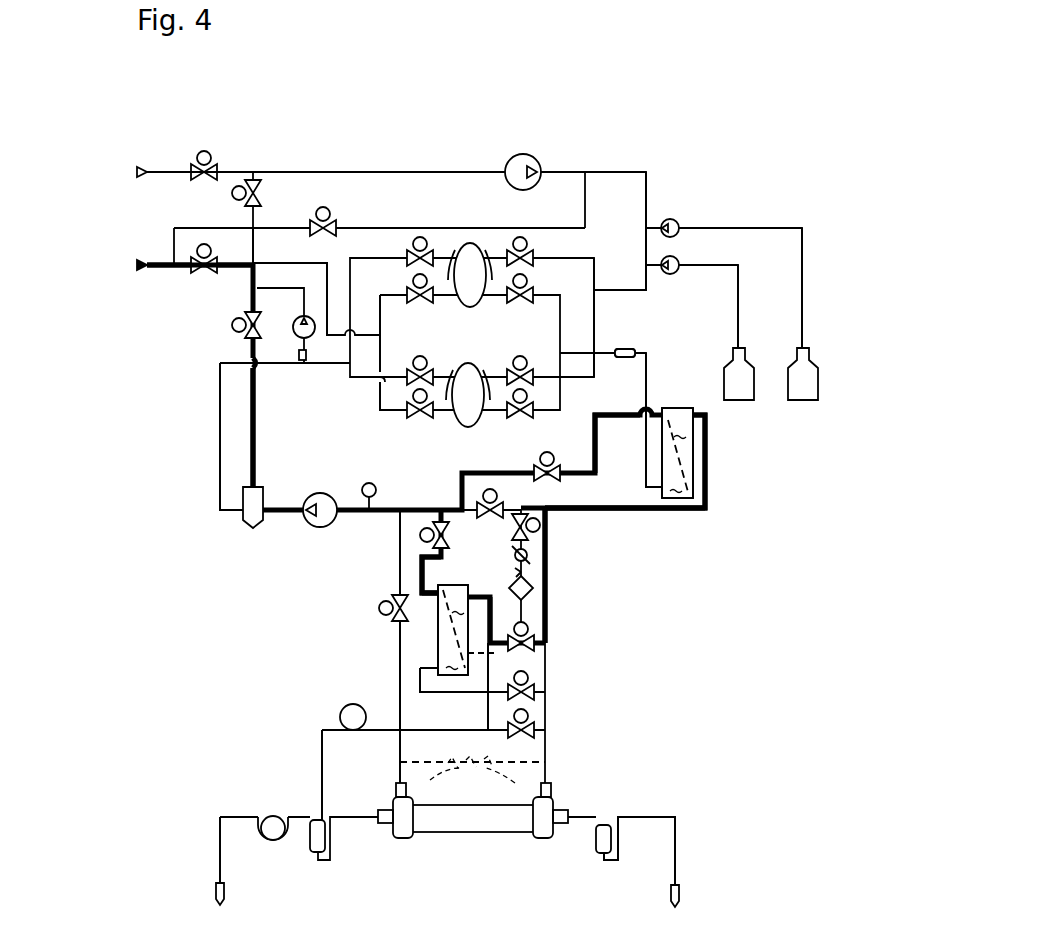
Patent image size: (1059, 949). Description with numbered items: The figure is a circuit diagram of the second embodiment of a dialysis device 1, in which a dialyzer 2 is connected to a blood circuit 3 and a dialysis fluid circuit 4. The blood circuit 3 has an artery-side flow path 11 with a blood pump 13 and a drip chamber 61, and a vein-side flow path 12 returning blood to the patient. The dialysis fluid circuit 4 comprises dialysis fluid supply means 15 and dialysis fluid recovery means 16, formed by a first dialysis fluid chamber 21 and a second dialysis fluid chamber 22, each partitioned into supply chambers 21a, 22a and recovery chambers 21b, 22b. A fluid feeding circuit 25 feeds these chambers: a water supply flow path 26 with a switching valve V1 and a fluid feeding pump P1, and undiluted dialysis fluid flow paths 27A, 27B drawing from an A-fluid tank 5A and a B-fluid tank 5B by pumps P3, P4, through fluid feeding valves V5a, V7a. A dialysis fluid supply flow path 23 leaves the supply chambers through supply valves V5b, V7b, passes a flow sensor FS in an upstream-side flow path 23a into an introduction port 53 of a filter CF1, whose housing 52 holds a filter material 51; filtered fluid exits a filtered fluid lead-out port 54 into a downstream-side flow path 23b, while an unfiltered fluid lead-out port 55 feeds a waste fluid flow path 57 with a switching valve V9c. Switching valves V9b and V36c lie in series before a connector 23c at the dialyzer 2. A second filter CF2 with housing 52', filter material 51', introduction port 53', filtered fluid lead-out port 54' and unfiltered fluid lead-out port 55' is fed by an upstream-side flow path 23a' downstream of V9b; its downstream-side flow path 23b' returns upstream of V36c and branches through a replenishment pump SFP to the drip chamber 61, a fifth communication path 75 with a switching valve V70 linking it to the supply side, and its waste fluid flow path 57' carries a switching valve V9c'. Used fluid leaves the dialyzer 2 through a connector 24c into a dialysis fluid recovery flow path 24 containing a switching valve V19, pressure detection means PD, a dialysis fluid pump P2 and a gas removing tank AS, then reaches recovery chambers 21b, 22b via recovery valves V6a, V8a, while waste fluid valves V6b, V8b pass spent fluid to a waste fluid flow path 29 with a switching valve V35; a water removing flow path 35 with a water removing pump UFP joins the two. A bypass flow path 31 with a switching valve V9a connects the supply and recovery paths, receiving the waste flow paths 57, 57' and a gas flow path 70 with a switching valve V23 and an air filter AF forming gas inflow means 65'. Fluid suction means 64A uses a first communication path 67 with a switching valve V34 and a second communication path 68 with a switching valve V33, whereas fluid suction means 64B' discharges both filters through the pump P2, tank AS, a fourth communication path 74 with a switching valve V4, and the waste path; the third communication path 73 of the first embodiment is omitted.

The dialysis device 1 is at (642, 70).
The dialyzer 2 is at (484, 838).
The blood circuit 3 is at (677, 838).
The dialysis fluid circuit 4 is at (698, 515).
The A-fluid tank 5A is at (802, 400).
The B-fluid tank 5B is at (740, 400).
The artery-side flow path 11 is at (220, 860).
The vein-side flow path 12 is at (676, 862).
The blood pump 13 is at (274, 813).
The dialysis fluid supply means 15 is at (597, 310).
The dialysis fluid recovery means 16 is at (377, 394).
The first dialysis fluid chamber 21 is at (462, 306).
The dialysis fluid supply chamber 21a is at (481, 248).
The dialysis fluid recovery chamber 21b is at (458, 248).
The second dialysis fluid chamber 22 is at (460, 422).
The dialysis fluid supply chamber 22a is at (482, 378).
The dialysis fluid recovery chamber 22b is at (457, 378).
The dialysis fluid supply flow path 23 is at (670, 512).
The upstream-side flow path 23a is at (670, 420).
The downstream-side flow path 23b is at (716, 473).
The upstream-side flow path 23a' is at (423, 685).
The downstream-side flow path 23b' is at (565, 686).
The connector 23c is at (497, 796).
The dialysis fluid recovery flow path 24 is at (397, 776).
The connector 24c is at (439, 796).
The fluid feeding circuit 25 is at (646, 172).
The water supply flow path 26 is at (351, 171).
The undiluted dialysis fluid flow path 27A is at (802, 300).
The undiluted dialysis fluid flow path 27B is at (738, 302).
The waste fluid flow path 29 is at (238, 270).
The bypass flow path 31 is at (435, 509).
The water removing flow path 35 is at (301, 360).
The filter material 51 is at (643, 462).
The filter material 51' is at (493, 667).
The housing 52 is at (741, 453).
The housing 52' is at (453, 655).
The introduction port 53 is at (636, 497).
The introduction port 53' is at (398, 669).
The filtered fluid lead-out port 54 is at (689, 424).
The filtered fluid lead-out port 54' is at (470, 616).
The unfiltered fluid lead-out port 55 is at (637, 431).
The unfiltered fluid lead-out port 55' is at (444, 583).
The waste fluid flow path 57 is at (617, 429).
The waste fluid flow path 57' is at (393, 575).
The drip chamber 61 is at (310, 860).
The fluid suction means 64A is at (322, 274).
The fluid suction means 64B' is at (151, 435).
The gas inflow means 65' is at (626, 565).
The first communication path 67 is at (255, 250).
The second communication path 68 is at (410, 227).
The gas flow path 70 is at (548, 532).
The third communication path 73 is at (397, 638).
The fourth communication path 74 is at (249, 397).
The fifth communication path 75 is at (495, 650).
The air filter AF is at (536, 598).
The gas removing tank AS is at (250, 526).
The filter CF1 is at (694, 465).
The filter CF2 is at (434, 621).
The flow sensor FS is at (630, 353).
The fluid feeding pump P1 is at (513, 153).
The dialysis fluid pump P2 is at (318, 495).
The pump P3 is at (680, 218).
The pump P4 is at (680, 275).
The pressure detection means PD is at (371, 484).
The replenishment pump SFP is at (344, 712).
The water removing pump UFP is at (296, 323).
The switching valve V1 is at (214, 160).
The switching valve V4 is at (234, 329).
The fluid feeding valve V5a is at (535, 246).
The supply valve V5b is at (535, 284).
The recovery valve V6a is at (406, 250).
The waste fluid valve V6b is at (406, 287).
The fluid feeding valve V7a is at (526, 363).
The supply valve V7b is at (522, 418).
The recovery valve V8a is at (410, 363).
The waste fluid valve V8b is at (409, 414).
The switching valve V9a is at (491, 498).
The switching valve V9b is at (546, 695).
The switching valve V9c is at (560, 456).
The switching valve V9c' is at (389, 540).
The switching valve V19 is at (380, 612).
The switching valve V23 is at (521, 521).
The switching valve V33 is at (332, 218).
The switching valve V34 is at (261, 194).
The switching valve V35 is at (190, 269).
The switching valve V36c is at (546, 732).
The switching valve V70 is at (548, 646).